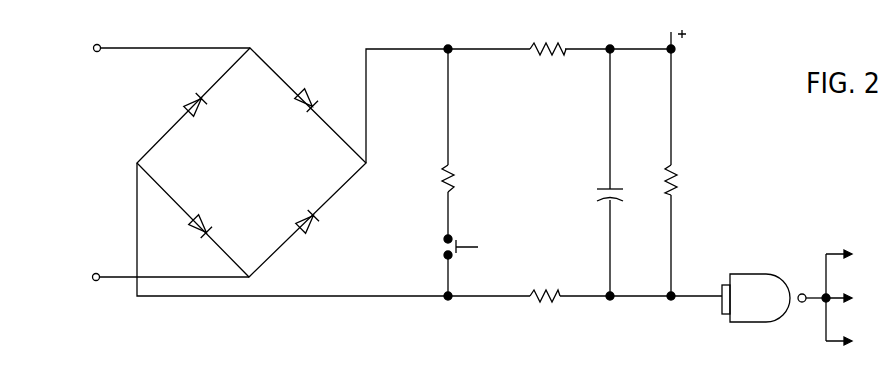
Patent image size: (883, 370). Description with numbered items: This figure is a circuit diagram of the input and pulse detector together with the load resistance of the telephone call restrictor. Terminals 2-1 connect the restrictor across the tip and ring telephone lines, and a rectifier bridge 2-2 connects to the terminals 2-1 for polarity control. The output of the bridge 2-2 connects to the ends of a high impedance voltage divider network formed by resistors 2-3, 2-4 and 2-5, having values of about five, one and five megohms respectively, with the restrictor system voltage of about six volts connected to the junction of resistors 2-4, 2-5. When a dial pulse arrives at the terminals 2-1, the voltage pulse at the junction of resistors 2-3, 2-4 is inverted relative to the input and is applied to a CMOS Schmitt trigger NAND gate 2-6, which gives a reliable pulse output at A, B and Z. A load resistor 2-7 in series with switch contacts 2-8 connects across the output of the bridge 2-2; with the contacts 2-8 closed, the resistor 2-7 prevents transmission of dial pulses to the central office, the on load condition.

The terminals 2-1 is at (94, 51).
The rectifier bridge 2-2 is at (333, 172).
The resistor 2-3 is at (545, 300).
The resistor 2-4 is at (680, 193).
The resistor 2-5 is at (536, 50).
The CMOS Schmitt trigger NAND gate 2-6 is at (758, 314).
The load resistor 2-7 is at (443, 167).
The switch contacts 2-8 is at (440, 250).